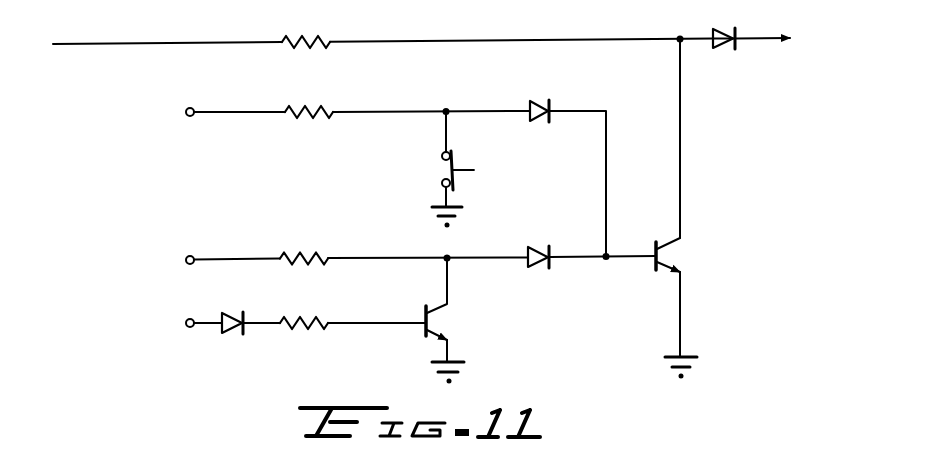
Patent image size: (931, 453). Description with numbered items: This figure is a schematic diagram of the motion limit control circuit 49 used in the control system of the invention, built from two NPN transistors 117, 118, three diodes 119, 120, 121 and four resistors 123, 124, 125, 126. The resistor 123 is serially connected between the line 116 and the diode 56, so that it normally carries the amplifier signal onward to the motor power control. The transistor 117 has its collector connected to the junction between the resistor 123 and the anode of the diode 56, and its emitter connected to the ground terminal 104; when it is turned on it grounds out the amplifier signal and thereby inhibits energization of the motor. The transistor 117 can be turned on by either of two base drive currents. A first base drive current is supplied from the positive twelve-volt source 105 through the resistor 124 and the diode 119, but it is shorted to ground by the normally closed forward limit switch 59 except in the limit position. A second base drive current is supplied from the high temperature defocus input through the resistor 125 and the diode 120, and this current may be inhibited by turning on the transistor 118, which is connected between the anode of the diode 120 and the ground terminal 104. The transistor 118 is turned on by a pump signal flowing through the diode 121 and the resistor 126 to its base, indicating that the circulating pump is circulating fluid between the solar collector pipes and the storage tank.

The motion limit control circuit 49 is at (472, 192).
The diode 56 is at (735, 38).
The forward limit switch 59 is at (455, 163).
The ground terminal 104 is at (440, 206).
The positive twelve-volt source 105 is at (192, 108).
The line 116 is at (158, 43).
The NPN transistor 117 is at (681, 246).
The NPN transistor 118 is at (448, 309).
The diode 119 is at (549, 110).
The diode 120 is at (551, 256).
The diode 121 is at (243, 320).
The resistor 123 is at (298, 42).
The resistor 124 is at (304, 112).
The resistor 125 is at (305, 258).
The resistor 126 is at (306, 323).